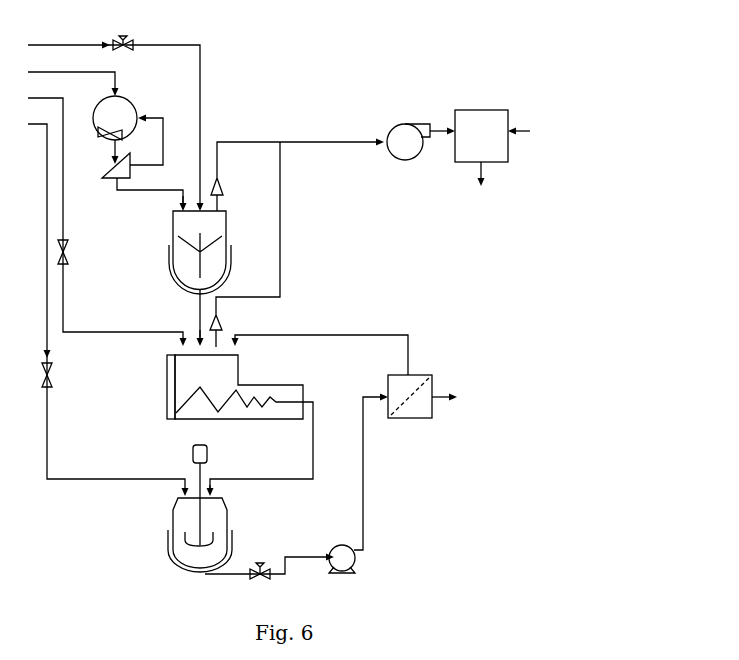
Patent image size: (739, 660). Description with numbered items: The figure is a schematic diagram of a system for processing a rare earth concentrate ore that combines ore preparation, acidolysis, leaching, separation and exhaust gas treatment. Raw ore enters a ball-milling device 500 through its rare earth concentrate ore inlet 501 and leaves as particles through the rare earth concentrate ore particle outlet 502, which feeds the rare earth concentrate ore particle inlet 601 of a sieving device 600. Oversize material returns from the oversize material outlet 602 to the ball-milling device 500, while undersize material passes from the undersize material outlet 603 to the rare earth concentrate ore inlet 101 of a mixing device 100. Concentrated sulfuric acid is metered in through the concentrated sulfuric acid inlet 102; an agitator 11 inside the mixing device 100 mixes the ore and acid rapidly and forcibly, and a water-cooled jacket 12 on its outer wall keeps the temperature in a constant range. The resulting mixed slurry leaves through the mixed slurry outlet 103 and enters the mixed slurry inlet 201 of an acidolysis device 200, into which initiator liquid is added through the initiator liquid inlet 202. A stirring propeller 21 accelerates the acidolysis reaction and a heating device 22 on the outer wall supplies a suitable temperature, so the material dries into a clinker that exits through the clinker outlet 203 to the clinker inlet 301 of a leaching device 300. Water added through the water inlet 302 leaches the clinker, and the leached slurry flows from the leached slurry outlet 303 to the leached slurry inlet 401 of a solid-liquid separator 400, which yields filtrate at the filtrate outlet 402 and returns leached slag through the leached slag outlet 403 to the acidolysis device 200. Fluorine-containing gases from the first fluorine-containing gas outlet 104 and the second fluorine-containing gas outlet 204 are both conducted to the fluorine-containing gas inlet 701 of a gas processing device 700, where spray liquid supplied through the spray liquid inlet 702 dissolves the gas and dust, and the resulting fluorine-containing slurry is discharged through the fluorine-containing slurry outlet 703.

The mixing device 100 is at (199, 250).
The agitator 11 is at (199, 255).
The water-cooled jacket 12 is at (189, 269).
The rare earth concentrate ore inlet 101 is at (170, 200).
The concentrated sulfuric acid inlet 102 is at (116, 123).
The mixed slurry outlet 103 is at (190, 318).
The first fluorine-containing gas outlet 104 is at (297, 175).
The acidolysis device 200 is at (239, 387).
The stirring propeller 21 is at (239, 400).
The heating device 22 is at (159, 387).
The mixed slurry inlet 201 is at (188, 331).
The initiator liquid inlet 202 is at (107, 224).
The clinker outlet 203 is at (270, 439).
The second fluorine-containing gas outlet 204 is at (245, 244).
The leaching device 300 is at (200, 546).
The clinker inlet 301 is at (226, 493).
The water inlet 302 is at (108, 312).
The leached slurry outlet 303 is at (269, 573).
The solid-liquid separator 400 is at (410, 410).
The leached slurry inlet 401 is at (371, 467).
The filtrate outlet 402 is at (444, 392).
The leached slag outlet 403 is at (334, 355).
The ball-milling device 500 is at (115, 118).
The rare earth concentrate ore inlet 501 is at (73, 84).
The rare earth concentrate ore particle outlet 502 is at (96, 132).
The sieving device 600 is at (101, 167).
The rare earth concentrate ore particle inlet 601 is at (104, 152).
The oversize material outlet 602 is at (146, 140).
The undersize material outlet 603 is at (143, 194).
The gas processing device 700 is at (481, 136).
The fluorine-containing gas inlet 701 is at (442, 124).
The spray liquid inlet 702 is at (522, 124).
The fluorine-containing slurry outlet 703 is at (493, 174).